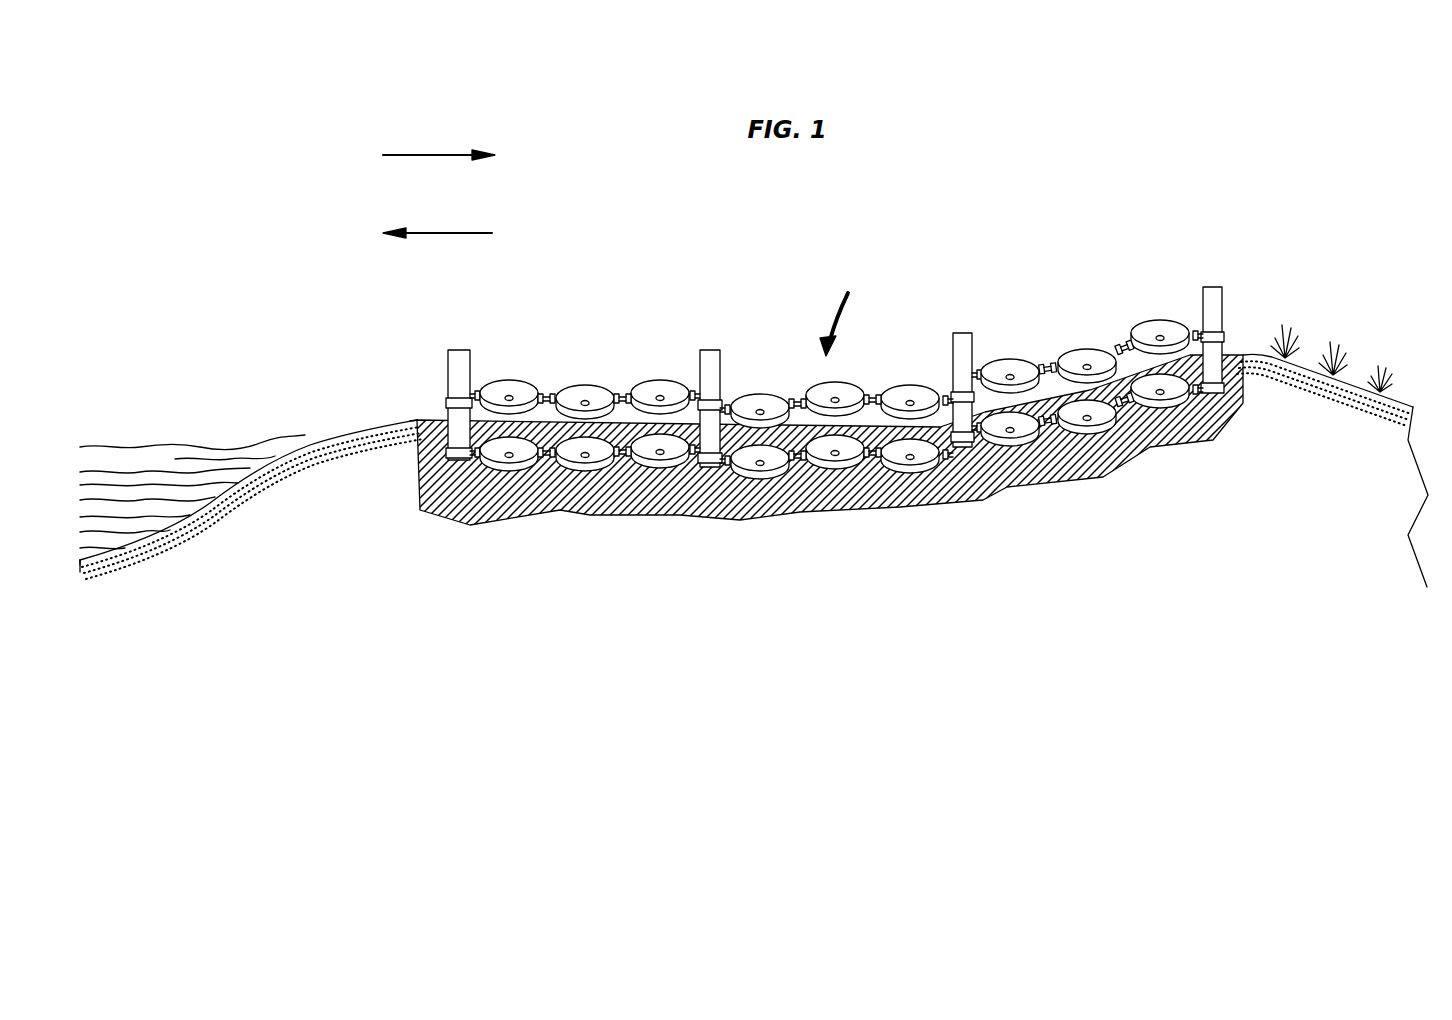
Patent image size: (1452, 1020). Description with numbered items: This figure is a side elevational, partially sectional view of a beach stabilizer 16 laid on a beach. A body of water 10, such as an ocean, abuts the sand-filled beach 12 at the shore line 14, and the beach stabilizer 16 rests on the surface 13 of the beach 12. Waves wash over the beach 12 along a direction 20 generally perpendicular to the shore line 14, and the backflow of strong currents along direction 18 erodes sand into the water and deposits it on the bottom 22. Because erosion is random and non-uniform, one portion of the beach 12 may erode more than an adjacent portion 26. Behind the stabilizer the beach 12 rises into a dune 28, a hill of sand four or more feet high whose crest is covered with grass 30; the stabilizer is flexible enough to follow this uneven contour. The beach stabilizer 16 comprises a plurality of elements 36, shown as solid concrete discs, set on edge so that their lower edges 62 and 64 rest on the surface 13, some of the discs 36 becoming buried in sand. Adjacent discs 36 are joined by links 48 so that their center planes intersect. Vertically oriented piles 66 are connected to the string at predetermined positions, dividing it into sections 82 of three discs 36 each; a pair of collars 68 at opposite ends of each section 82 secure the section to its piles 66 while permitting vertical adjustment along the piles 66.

The body of water 10 is at (183, 457).
The beach 12 is at (390, 427).
The surface of the beach 13 is at (408, 420).
The shore line 14 is at (350, 440).
The beach stabilizer 16 is at (847, 312).
The direction of erosion 18 is at (462, 233).
The direction of wave wash 20 is at (428, 155).
The bottom of the ocean 22 is at (100, 562).
The portion of the beach 26 is at (458, 350).
The dune 28 is at (1260, 387).
The grass 30 is at (1328, 350).
The elements (discs) 36 is at (582, 385).
The links 48 is at (1117, 335).
The lower edge of disc 62 is at (837, 427).
The lower edge of disc 64 is at (930, 420).
The piles 66 is at (707, 350).
The collars 68 is at (730, 397).
The sections 82 is at (982, 270).